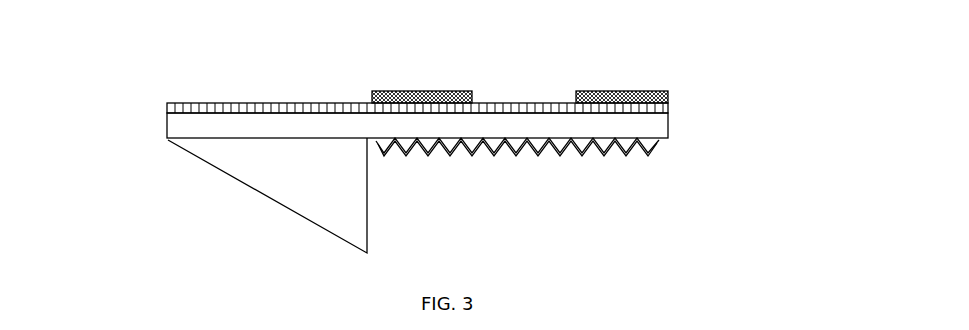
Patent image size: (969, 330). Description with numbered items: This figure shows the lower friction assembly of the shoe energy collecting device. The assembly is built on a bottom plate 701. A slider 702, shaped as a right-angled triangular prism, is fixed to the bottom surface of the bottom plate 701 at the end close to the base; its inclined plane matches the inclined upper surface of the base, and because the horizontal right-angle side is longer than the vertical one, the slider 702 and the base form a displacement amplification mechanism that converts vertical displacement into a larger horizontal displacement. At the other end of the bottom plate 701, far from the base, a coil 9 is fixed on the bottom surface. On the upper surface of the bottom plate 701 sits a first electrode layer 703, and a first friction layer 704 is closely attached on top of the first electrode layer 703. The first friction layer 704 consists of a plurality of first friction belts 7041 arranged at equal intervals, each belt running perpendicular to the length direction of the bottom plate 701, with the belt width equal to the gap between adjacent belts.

The bottom plate 701 is at (167, 136).
The slider 702 is at (272, 202).
The first electrode layer 703 is at (167, 108).
The first friction layer 704 is at (616, 72).
The first friction belt 7041 is at (452, 98).
The coil 9 is at (655, 148).